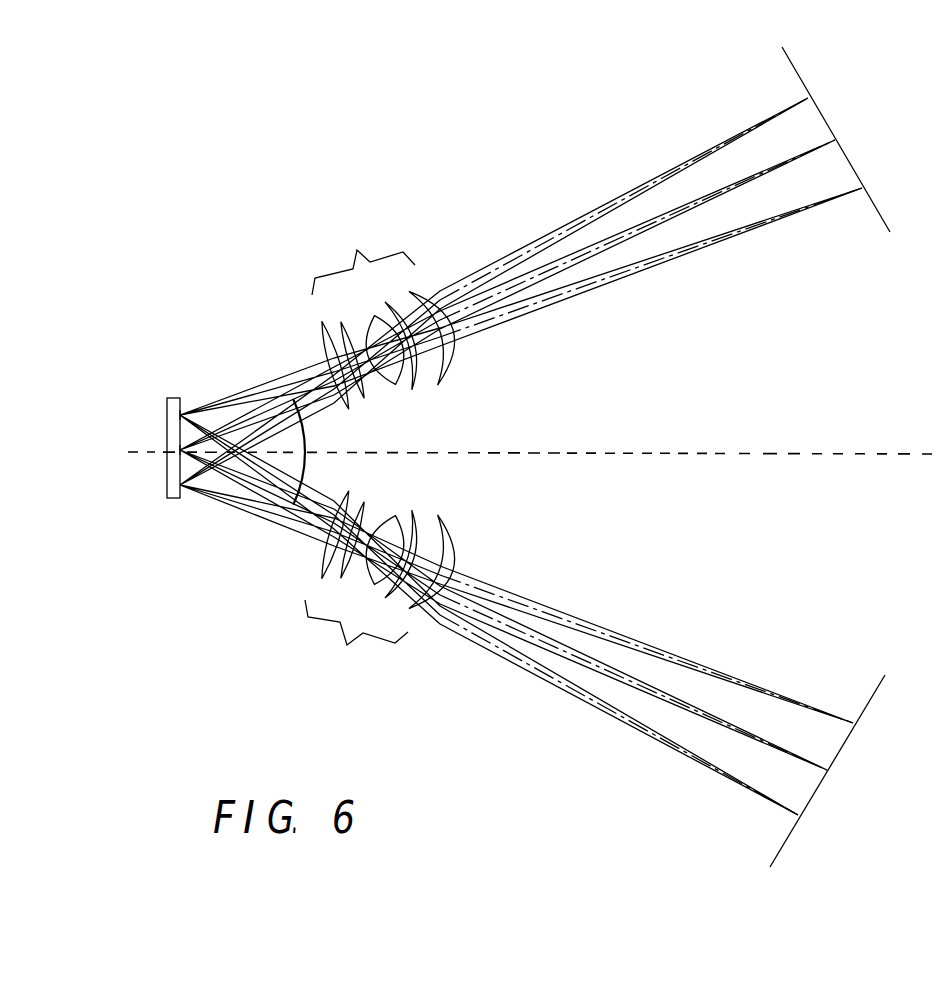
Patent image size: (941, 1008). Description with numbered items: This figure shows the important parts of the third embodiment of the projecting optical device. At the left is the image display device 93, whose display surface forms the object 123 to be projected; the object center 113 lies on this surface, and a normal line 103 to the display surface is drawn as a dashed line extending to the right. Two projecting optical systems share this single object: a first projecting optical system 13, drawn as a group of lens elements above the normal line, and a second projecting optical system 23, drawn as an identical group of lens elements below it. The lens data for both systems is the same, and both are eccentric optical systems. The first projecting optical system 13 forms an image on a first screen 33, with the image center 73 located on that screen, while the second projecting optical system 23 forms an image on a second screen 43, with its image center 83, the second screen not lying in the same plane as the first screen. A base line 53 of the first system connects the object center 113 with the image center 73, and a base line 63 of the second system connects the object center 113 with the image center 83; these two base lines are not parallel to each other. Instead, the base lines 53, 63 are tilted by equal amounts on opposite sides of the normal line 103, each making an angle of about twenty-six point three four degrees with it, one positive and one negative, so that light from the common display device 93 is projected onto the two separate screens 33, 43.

The first projecting optical system 13 is at (389, 310).
The second projecting optical system 23 is at (386, 589).
The first screen 33 is at (877, 212).
The second screen 43 is at (870, 695).
The base line of first projecting optical system 53 is at (277, 398).
The base line of second projecting optical system 63 is at (245, 490).
The image center 73 is at (835, 138).
The image center 83 is at (827, 770).
The image display device 93 is at (175, 397).
The normal line 103 is at (723, 454).
The object center 113 is at (183, 452).
The object 123 is at (187, 435).